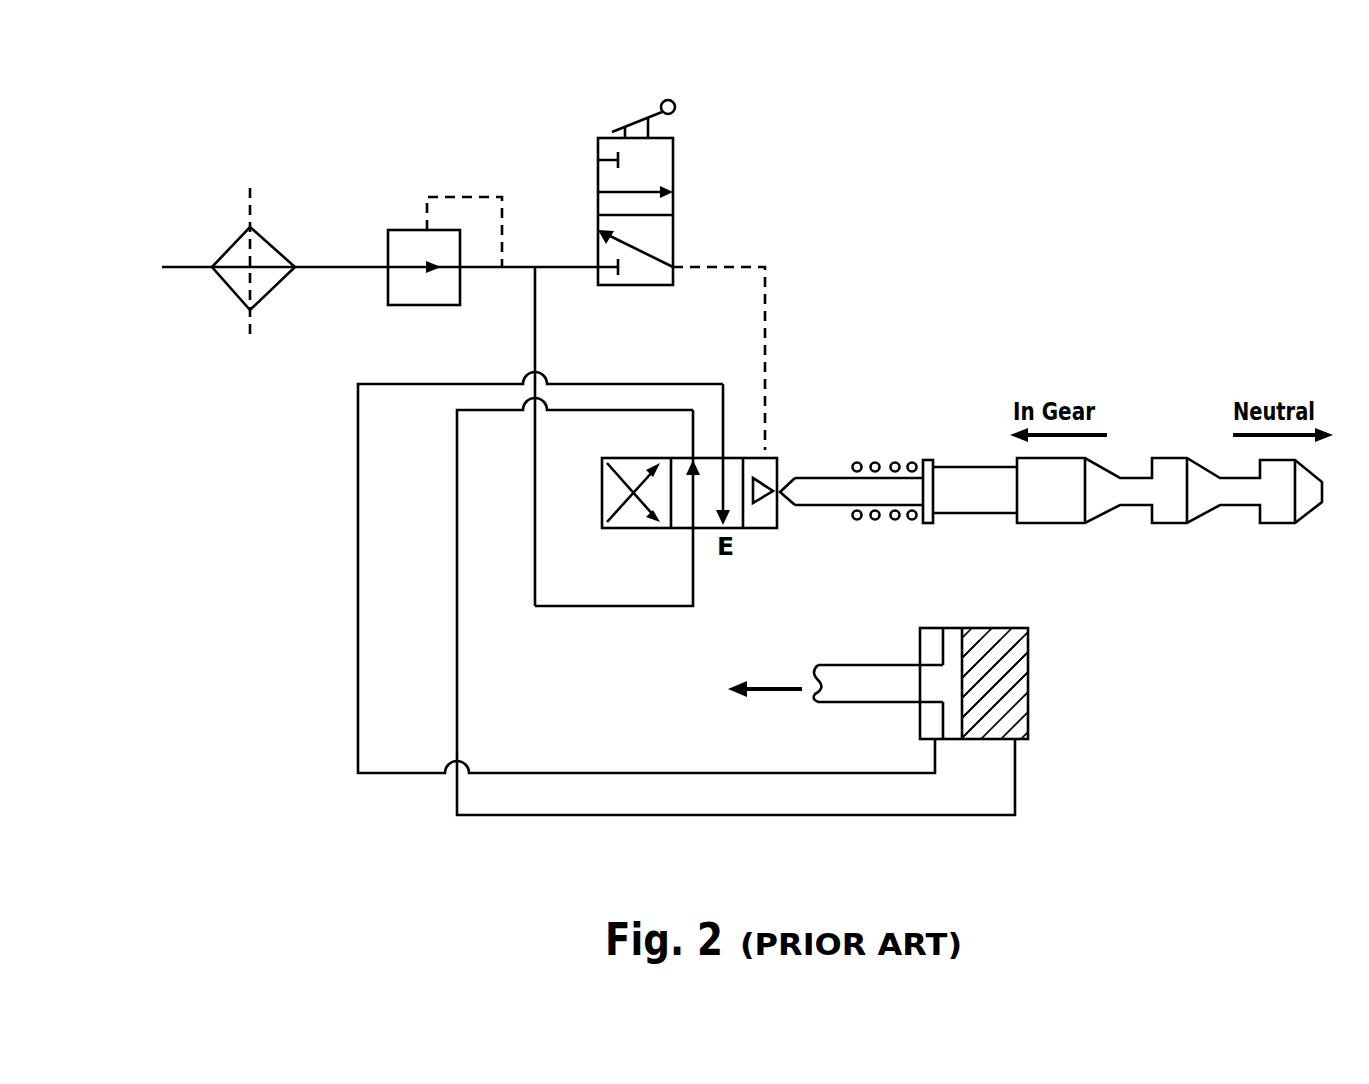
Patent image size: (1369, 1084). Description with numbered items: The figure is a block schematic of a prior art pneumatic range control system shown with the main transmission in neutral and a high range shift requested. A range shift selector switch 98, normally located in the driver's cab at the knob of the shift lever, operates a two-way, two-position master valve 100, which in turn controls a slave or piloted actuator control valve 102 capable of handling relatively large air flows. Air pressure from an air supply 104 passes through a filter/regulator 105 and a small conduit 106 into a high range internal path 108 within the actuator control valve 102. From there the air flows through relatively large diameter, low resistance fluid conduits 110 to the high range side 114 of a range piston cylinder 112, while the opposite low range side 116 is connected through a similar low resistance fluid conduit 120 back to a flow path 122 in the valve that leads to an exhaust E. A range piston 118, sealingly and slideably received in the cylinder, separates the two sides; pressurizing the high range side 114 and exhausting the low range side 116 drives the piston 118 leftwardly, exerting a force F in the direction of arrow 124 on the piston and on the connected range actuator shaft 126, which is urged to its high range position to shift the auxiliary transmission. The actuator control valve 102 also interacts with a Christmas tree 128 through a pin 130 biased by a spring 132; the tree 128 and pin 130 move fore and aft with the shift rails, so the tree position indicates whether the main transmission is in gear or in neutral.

The range shift selector switch 98 is at (660, 117).
The master valve 100 is at (590, 173).
The actuator control valve 102 is at (782, 447).
The air supply 104 is at (267, 243).
The filter/regulator 105 is at (397, 232).
The small conduit 106 is at (533, 317).
The high range internal path 108 is at (693, 508).
The fluid conduits 110 is at (845, 817).
The range piston cylinder 112 is at (1042, 650).
The high range side 114 is at (1008, 708).
The low range side 116 is at (930, 650).
The range piston 118 is at (953, 640).
The fluid conduit 120 is at (650, 772).
The flow path 122 is at (722, 493).
The arrow 124 is at (763, 693).
The range actuator shaft 126 is at (850, 687).
The Christmas tree 128 is at (1058, 508).
The pin 130 is at (820, 522).
The spring 132 is at (899, 458).